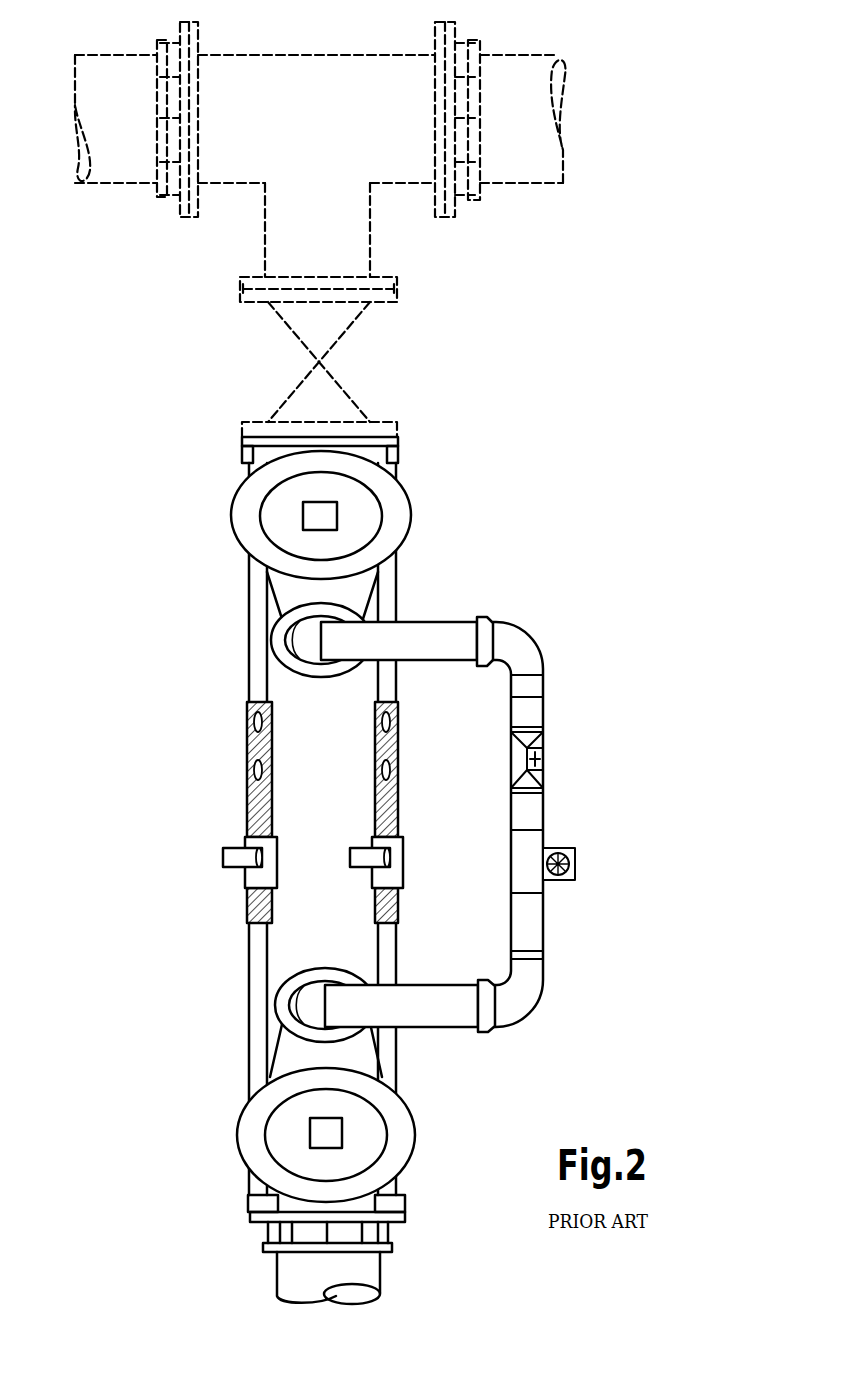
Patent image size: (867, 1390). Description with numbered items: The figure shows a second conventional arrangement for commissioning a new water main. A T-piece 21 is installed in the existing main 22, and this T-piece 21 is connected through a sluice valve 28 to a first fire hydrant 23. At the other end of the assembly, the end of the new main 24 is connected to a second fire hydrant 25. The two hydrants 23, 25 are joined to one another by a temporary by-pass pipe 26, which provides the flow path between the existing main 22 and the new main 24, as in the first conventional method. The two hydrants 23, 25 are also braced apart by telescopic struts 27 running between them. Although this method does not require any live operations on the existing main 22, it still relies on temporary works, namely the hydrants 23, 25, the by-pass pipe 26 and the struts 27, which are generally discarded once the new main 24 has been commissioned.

The T-piece 21 is at (258, 70).
The existing main 22 is at (537, 153).
The first fire hydrant 23 is at (393, 502).
The new main 24 is at (290, 1277).
The second fire hydrant 25 is at (398, 1125).
The temporary by-pass pipe 26 is at (452, 622).
The telescopic struts 27 is at (249, 766).
The sluice valve 28 is at (355, 360).